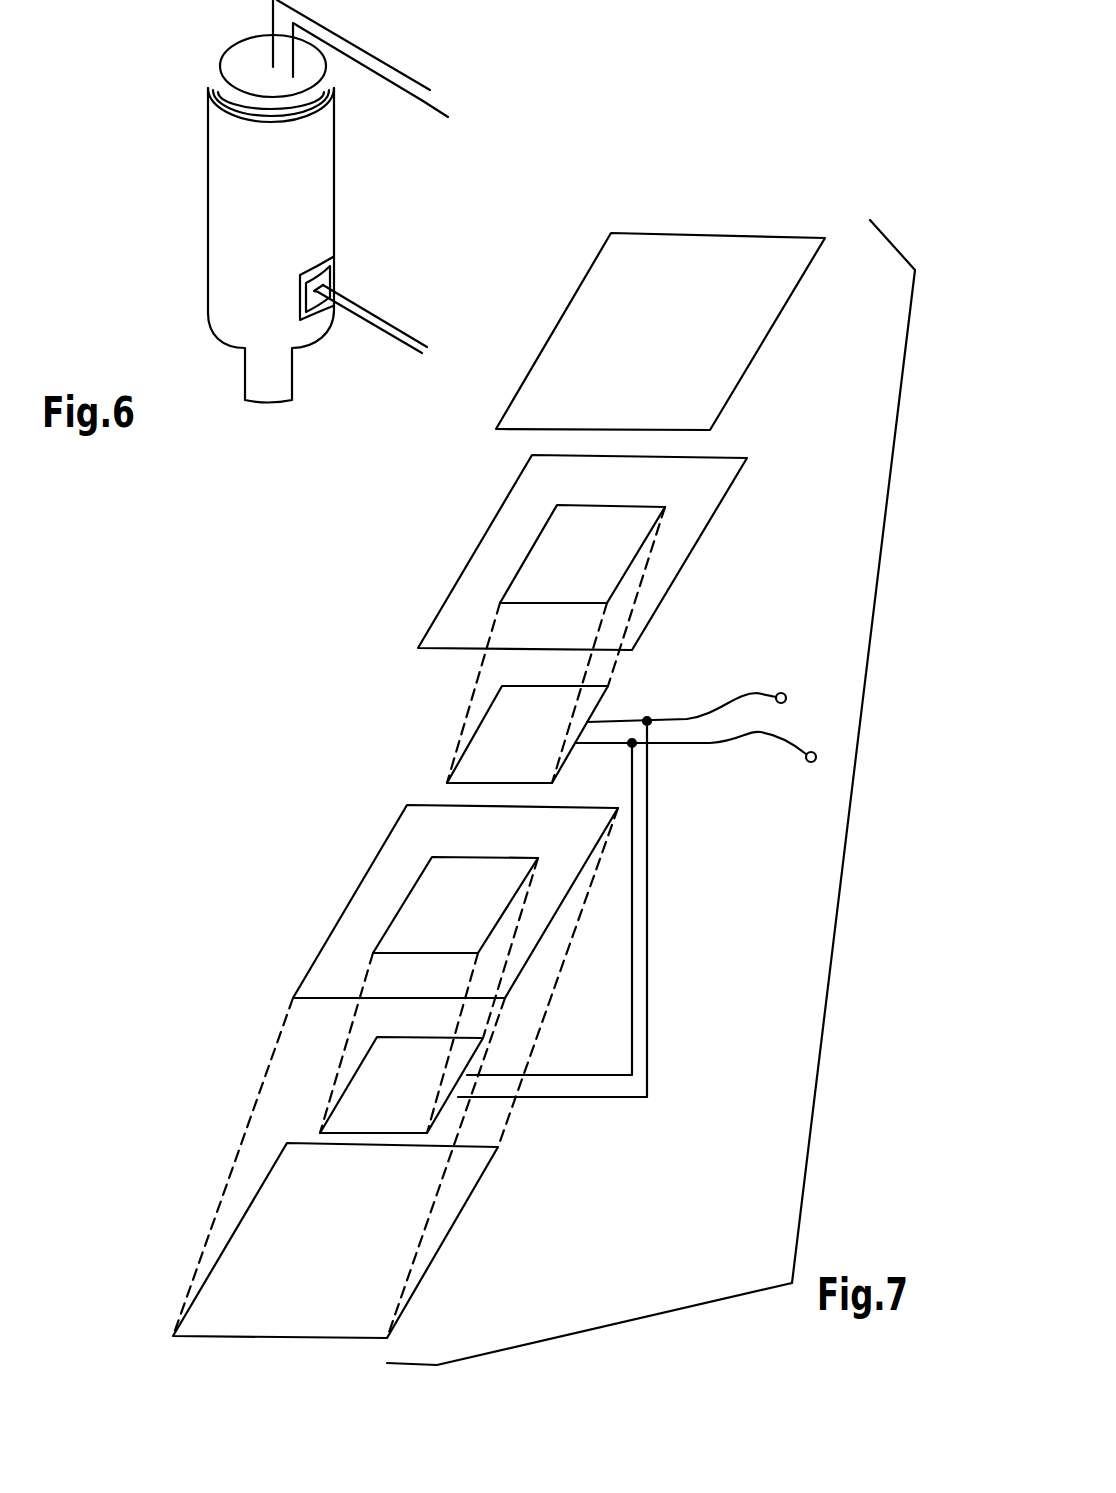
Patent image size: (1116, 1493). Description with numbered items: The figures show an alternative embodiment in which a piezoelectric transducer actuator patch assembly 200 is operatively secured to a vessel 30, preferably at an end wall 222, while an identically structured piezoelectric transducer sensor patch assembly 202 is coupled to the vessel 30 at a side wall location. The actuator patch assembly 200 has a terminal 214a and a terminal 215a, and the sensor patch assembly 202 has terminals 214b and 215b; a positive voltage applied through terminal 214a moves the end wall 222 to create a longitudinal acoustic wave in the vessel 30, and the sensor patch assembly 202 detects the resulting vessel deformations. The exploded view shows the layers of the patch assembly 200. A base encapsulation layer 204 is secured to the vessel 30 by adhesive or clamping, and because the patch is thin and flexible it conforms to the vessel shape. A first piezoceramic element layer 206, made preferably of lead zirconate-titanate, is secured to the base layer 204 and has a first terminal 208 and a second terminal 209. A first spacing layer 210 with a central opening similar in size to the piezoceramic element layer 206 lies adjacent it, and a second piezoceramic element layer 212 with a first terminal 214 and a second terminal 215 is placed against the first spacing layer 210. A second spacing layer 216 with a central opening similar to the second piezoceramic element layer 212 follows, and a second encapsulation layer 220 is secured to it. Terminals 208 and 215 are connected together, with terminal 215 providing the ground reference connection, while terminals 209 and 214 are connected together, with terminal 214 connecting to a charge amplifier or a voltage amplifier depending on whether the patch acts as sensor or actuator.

In FIG. 6, the vessel 30 is at (223, 264).
In FIG. 6, the piezoelectric transducer actuator patch assembly 200 is at (226, 77).
In FIG. 7, the piezoelectric transducer actuator patch assembly 200 is at (268, 662).
In FIG. 6, the piezoelectric transducer sensor patch assembly 202 is at (348, 274).
In FIG. 7, the base encapsulation layer 204 is at (263, 1247).
In FIG. 7, the first piezoceramic element layer 206 is at (370, 1085).
In FIG. 7, the first terminal 208 is at (608, 1098).
In FIG. 7, the second terminal 209 is at (592, 1073).
In FIG. 7, the first spacing layer 210 is at (370, 902).
In FIG. 7, the second piezoceramic element layer 212 is at (500, 732).
In FIG. 7, the first terminal 214 is at (712, 745).
In FIG. 6, the terminal 214a is at (425, 103).
In FIG. 7, the terminal 214a is at (809, 763).
In FIG. 6, the terminal 214b is at (387, 333).
In FIG. 7, the second terminal 215 is at (717, 710).
In FIG. 6, the terminal 215a is at (365, 50).
In FIG. 7, the terminal 215a is at (786, 694).
In FIG. 6, the terminal 215b is at (372, 310).
In FIG. 7, the second spacing layer 216 is at (490, 555).
In FIG. 7, the second encapsulation layer 220 is at (713, 339).
In FIG. 6, the end wall 222 is at (247, 63).